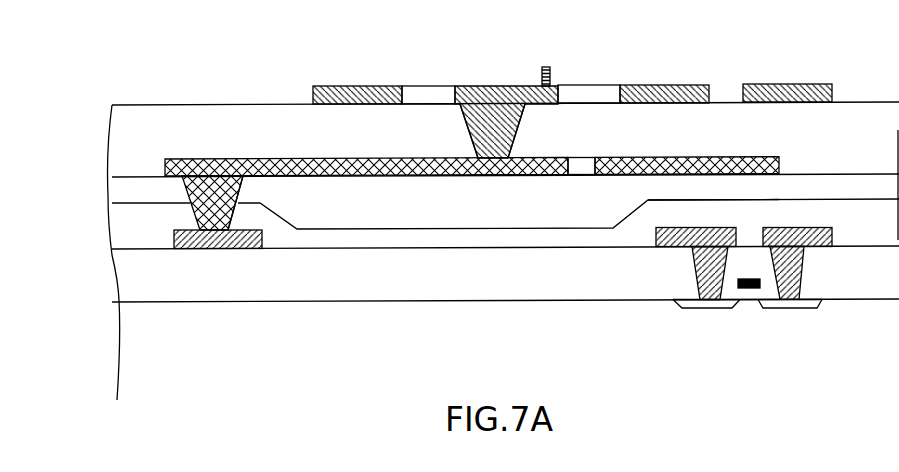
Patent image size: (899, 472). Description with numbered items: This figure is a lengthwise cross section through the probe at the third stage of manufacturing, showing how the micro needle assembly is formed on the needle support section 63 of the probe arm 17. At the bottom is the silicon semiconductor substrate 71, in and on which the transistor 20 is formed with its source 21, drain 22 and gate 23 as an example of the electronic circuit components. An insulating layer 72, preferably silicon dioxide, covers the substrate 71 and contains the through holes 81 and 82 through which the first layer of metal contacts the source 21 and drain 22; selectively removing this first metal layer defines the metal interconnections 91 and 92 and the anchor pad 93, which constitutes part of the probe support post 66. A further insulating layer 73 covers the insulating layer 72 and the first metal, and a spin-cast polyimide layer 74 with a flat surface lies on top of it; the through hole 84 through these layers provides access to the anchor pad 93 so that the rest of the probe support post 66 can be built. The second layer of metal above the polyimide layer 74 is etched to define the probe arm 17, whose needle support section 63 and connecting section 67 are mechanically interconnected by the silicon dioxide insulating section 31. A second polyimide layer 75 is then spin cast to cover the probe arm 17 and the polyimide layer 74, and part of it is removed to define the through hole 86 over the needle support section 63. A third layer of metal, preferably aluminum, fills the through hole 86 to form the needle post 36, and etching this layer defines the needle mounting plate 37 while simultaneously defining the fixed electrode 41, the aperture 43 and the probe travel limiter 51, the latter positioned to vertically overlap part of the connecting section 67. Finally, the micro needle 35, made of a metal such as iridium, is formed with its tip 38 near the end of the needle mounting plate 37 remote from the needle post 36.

The probe arm 17 is at (679, 139).
The transistor 20 is at (732, 328).
The source 21 is at (710, 309).
The drain 22 is at (790, 309).
The gate 23 is at (748, 289).
The insulating section 31 is at (583, 157).
The micro needle 35 is at (540, 72).
The needle post 36 is at (467, 122).
The needle mounting plate 37 is at (556, 92).
The tip 38 is at (547, 66).
The fixed electrode 41 is at (357, 86).
The aperture 43 is at (430, 97).
The probe travel limiter 51 is at (794, 83).
The needle support section 63 is at (345, 158).
The probe support post 66 is at (245, 216).
The connecting section 67 is at (738, 156).
The silicon semiconductor substrate 71 is at (118, 333).
The insulating layer 72 is at (113, 280).
The insulating layer 73 is at (108, 235).
The polyimide layer 74 is at (108, 192).
The second polyimide layer 75 is at (110, 136).
The through hole 81 is at (695, 263).
The through hole 82 is at (803, 263).
The through hole 84 is at (242, 188).
The through hole 86 is at (517, 131).
The metal interconnection 91 is at (688, 227).
The metal interconnection 92 is at (808, 227).
The anchor pad 93 is at (215, 249).